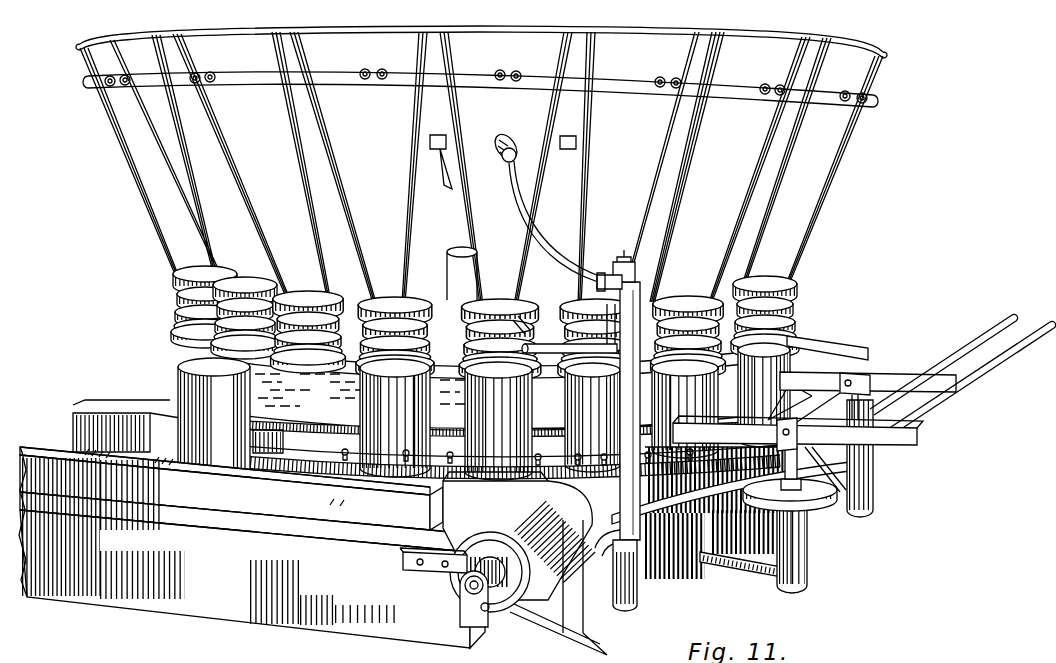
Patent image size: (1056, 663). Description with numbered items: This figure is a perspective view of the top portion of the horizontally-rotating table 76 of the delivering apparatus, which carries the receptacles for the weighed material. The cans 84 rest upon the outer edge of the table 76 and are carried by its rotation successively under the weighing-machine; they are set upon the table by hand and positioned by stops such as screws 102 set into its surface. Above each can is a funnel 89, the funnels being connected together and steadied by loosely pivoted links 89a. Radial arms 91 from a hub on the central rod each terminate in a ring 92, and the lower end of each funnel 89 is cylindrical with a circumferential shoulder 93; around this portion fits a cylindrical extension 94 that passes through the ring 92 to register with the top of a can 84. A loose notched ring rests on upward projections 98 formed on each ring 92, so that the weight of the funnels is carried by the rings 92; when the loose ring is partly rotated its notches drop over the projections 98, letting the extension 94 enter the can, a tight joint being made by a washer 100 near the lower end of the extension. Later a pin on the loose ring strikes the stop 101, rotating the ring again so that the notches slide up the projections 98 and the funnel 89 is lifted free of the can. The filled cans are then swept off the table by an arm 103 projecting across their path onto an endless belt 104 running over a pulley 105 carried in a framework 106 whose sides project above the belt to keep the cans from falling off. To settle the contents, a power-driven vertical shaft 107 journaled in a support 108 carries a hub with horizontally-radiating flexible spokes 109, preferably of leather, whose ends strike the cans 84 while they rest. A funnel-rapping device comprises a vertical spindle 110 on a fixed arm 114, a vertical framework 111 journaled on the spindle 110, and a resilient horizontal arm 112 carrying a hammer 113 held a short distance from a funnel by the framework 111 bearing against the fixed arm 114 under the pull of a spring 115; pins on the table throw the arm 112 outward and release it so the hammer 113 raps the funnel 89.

The horizontally-rotating table 76 is at (731, 512).
The can 84 is at (180, 393).
The funnel 89 is at (481, 168).
The links 89a is at (378, 80).
The radial arms 91 is at (178, 293).
The ring 92 is at (177, 308).
The circumferential shoulder 93 is at (198, 279).
The cylindrical extension 94 is at (300, 352).
The upward projections 98 is at (192, 313).
The washer 100 is at (192, 339).
The stop 101 is at (553, 355).
The screws 102 is at (340, 450).
The arm 103 is at (325, 425).
The endless belt 104 is at (517, 542).
The pulley 105 is at (465, 552).
The framework 106 is at (252, 547).
The vertical shaft 107 is at (838, 478).
The support 108 is at (798, 556).
The flexible spokes 109 is at (862, 346).
The vertical spindle 110 is at (622, 262).
The vertical framework 111 is at (656, 284).
The resilient horizontal arm 112 is at (528, 229).
The hammer 113 is at (516, 150).
The fixed arm 114 is at (587, 588).
The spring 115 is at (604, 290).